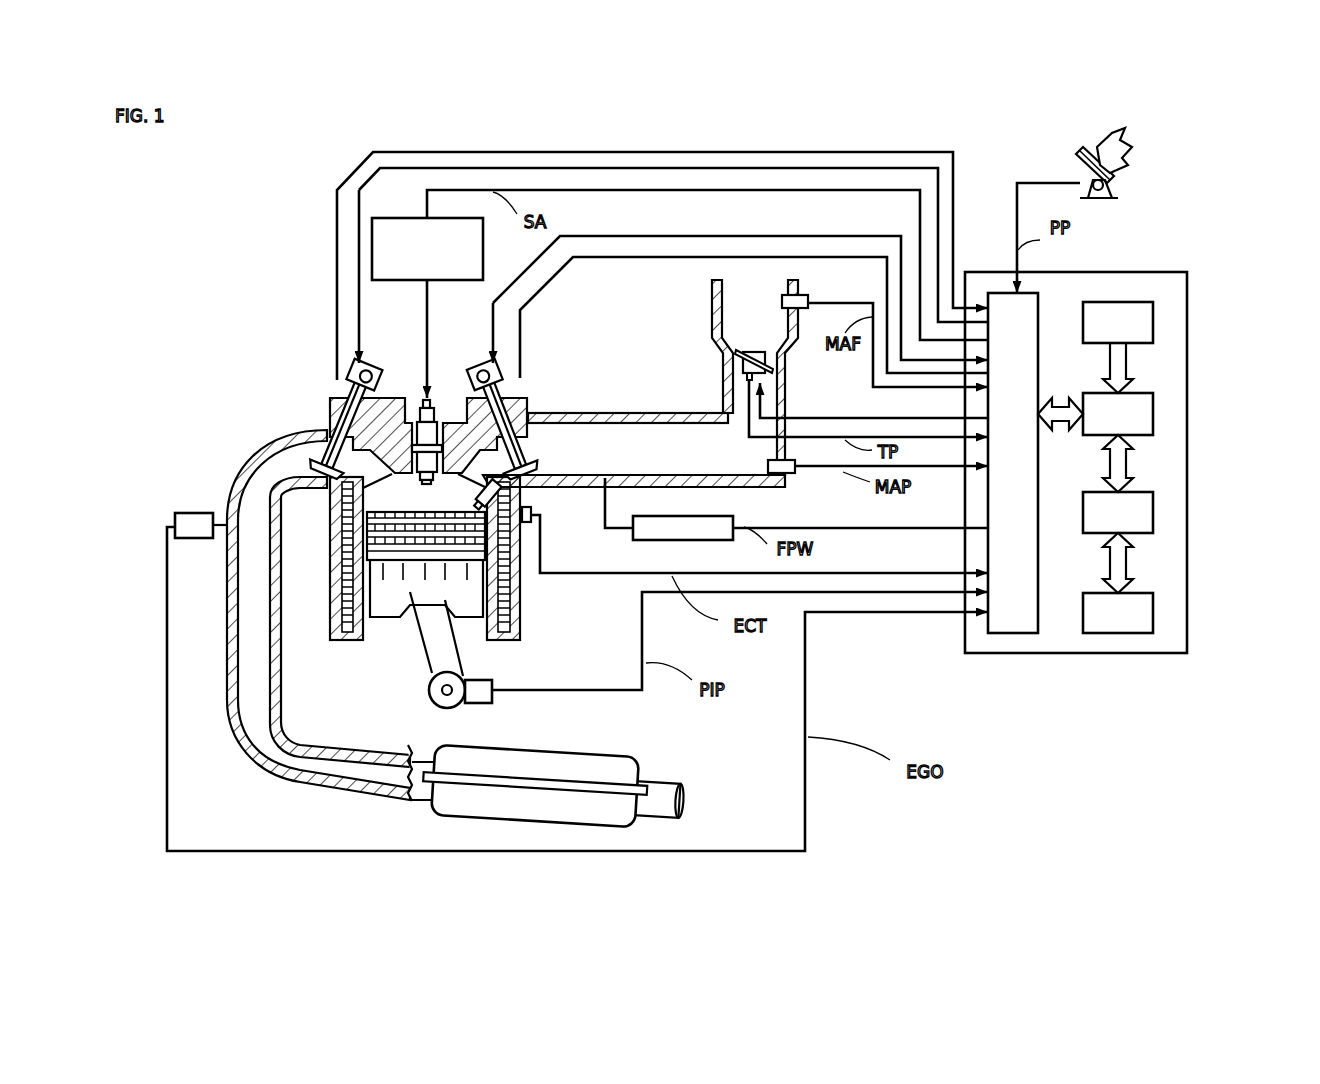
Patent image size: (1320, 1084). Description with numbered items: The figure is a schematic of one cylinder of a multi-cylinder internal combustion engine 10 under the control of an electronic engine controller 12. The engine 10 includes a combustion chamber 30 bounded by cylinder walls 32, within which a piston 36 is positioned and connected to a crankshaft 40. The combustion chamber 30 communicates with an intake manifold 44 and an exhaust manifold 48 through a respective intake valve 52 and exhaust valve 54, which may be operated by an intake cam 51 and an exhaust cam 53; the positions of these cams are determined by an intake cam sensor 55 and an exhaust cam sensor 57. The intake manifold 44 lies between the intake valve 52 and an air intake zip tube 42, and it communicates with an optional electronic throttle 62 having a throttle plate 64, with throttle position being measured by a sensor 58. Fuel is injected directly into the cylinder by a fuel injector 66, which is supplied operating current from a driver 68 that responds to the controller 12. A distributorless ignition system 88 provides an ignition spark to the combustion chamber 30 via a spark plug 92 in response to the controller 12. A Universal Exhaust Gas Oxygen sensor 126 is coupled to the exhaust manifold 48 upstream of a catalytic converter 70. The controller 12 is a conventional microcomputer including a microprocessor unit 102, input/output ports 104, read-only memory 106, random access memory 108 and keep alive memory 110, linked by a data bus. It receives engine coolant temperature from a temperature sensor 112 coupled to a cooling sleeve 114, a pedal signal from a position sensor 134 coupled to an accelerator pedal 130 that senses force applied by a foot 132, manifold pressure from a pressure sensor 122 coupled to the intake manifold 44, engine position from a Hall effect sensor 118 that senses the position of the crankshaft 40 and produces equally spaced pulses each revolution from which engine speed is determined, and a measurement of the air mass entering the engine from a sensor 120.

The internal combustion engine 10 is at (262, 350).
The electronic engine controller 12 is at (1177, 272).
The combustion chamber 30 is at (423, 496).
The cylinder walls 32 is at (365, 642).
The piston 36 is at (412, 602).
The crankshaft 40 is at (438, 706).
The air intake zip tube 42 is at (741, 330).
The intake manifold 44 is at (679, 462).
The exhaust manifold 48 is at (286, 470).
The intake cam 51 is at (481, 360).
The intake valve 52 is at (475, 462).
The exhaust cam 53 is at (372, 360).
The exhaust valve 54 is at (362, 460).
The intake cam sensor 55 is at (506, 392).
The exhaust cam sensor 57 is at (345, 378).
The throttle position sensor 58 is at (743, 380).
The electronic throttle 62 is at (765, 355).
The throttle plate 64 is at (740, 365).
The fuel injector 66 is at (505, 498).
The driver 68 is at (655, 541).
The catalytic converter 70 is at (600, 762).
The distributorless ignition system 88 is at (392, 216).
The spark plug 92 is at (430, 405).
The microprocessor unit 102 is at (1153, 410).
The input/output ports 104 is at (1040, 302).
The read-only memory 106 is at (1153, 320).
The random access memory 108 is at (1153, 512).
The keep alive memory 110 is at (1153, 613).
The temperature sensor 112 is at (532, 525).
The cooling sleeve 114 is at (510, 598).
The Hall effect sensor 118 is at (480, 704).
The air mass sensor 120 is at (815, 297).
The pressure sensor 122 is at (800, 478).
The Universal Exhaust Gas Oxygen sensor 126 is at (175, 515).
The accelerator pedal 130 is at (1077, 160).
The foot 132 is at (1127, 150).
The position sensor 134 is at (1117, 187).